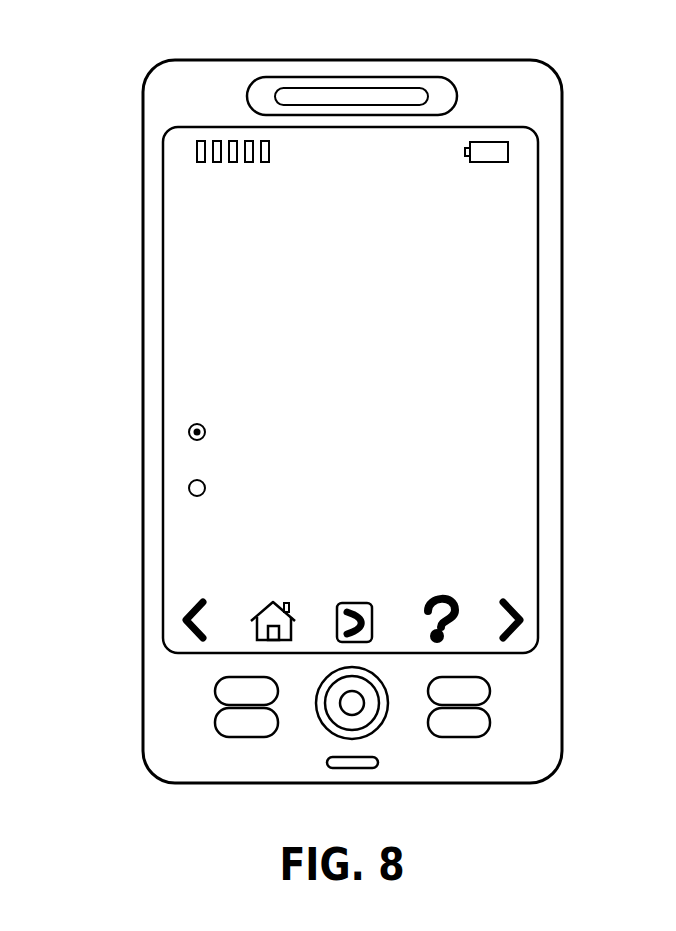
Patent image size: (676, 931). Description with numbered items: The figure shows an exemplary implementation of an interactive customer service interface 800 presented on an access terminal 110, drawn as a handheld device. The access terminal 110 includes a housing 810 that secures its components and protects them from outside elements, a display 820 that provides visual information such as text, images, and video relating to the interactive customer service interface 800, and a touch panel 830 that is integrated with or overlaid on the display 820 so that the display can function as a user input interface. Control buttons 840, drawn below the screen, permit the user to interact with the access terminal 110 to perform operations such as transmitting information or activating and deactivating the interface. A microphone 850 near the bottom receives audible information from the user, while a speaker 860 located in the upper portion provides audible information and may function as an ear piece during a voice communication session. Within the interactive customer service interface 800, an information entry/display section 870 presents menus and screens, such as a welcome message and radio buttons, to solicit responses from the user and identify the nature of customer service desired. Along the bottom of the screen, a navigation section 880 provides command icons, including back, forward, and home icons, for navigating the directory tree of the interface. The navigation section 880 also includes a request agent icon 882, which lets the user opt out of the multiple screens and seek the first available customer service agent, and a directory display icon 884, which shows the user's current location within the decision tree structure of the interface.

The access terminal 110 is at (142, 52).
The interactive customer service interface 800 is at (530, 112).
The housing 810 is at (143, 199).
The display 820 is at (168, 378).
The touch panel 830 is at (201, 254).
The control buttons 840 is at (195, 727).
The microphone 850 is at (330, 767).
The speaker 860 is at (248, 95).
The information entry/display section 870 is at (522, 316).
The navigation section 880 is at (535, 613).
The request agent icon 882 is at (373, 610).
The directory display icon 884 is at (440, 637).